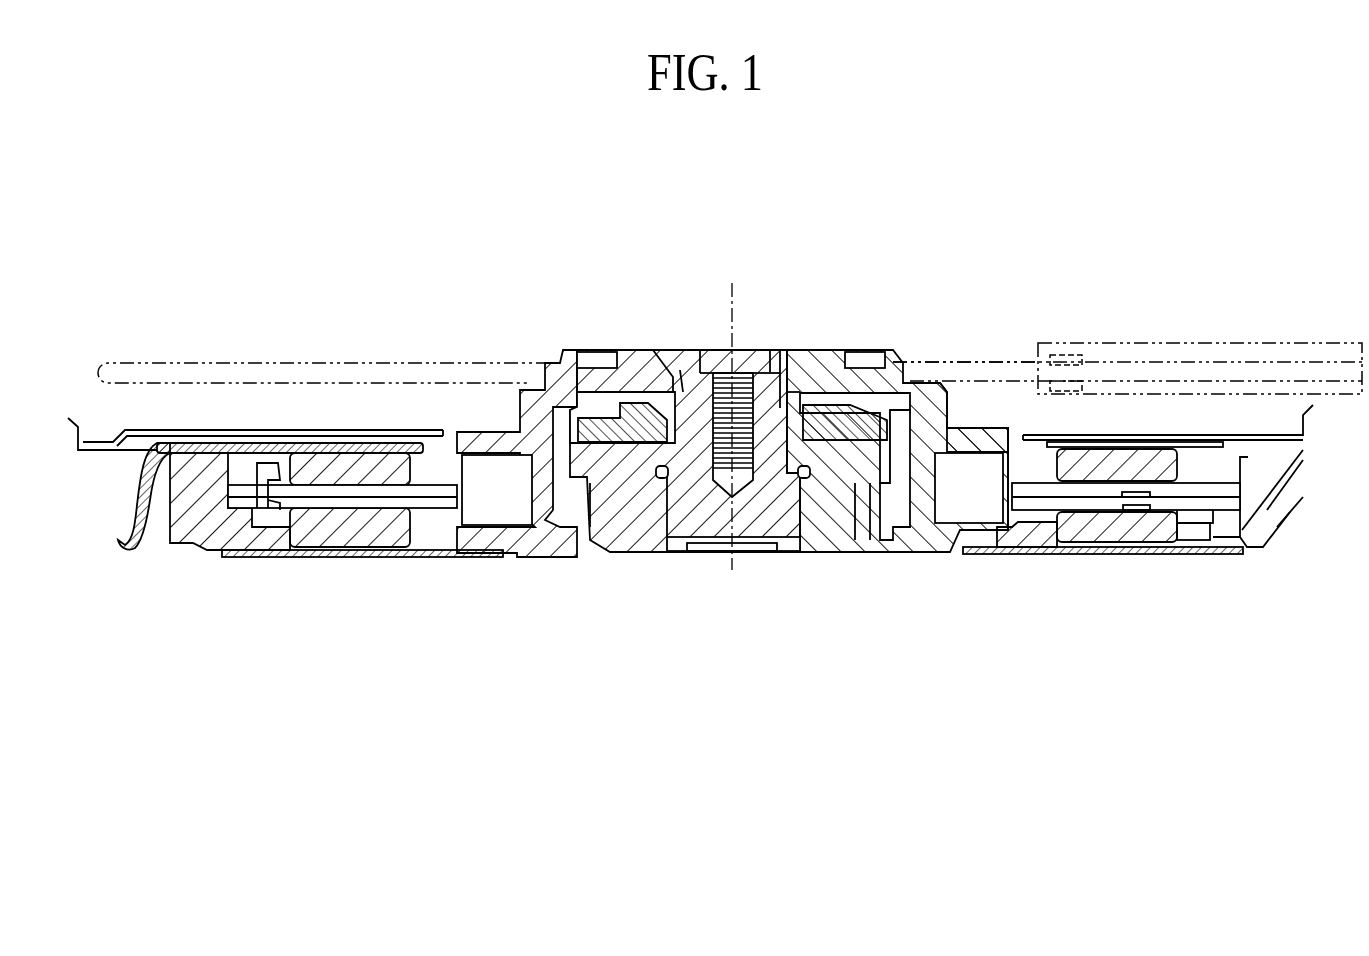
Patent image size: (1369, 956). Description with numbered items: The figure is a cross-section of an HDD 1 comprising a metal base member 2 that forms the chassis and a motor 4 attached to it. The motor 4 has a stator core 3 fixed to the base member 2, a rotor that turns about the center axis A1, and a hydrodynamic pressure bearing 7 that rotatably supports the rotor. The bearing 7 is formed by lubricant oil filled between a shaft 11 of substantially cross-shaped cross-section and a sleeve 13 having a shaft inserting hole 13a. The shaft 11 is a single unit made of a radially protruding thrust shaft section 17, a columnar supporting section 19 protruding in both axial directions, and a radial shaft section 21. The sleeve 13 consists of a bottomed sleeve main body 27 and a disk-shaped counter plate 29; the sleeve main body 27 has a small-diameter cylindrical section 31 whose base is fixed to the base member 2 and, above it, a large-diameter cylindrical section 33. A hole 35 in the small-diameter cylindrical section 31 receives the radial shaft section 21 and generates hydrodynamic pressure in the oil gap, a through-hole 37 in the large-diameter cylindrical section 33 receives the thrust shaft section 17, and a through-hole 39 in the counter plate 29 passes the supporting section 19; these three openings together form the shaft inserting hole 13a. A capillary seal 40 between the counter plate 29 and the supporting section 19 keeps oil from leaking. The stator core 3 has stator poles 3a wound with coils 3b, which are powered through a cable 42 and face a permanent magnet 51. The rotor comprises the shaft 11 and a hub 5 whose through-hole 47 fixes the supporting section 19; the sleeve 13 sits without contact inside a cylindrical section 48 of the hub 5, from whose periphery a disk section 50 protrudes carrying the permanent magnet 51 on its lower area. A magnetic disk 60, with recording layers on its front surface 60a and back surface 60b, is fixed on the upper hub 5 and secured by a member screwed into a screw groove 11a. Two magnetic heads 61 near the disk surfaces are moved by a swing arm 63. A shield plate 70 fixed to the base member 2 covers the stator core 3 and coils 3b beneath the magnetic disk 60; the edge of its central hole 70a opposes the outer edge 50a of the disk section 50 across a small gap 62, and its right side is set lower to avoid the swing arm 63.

The HDD 1 is at (538, 256).
The base member 2 is at (545, 555).
The stator core 3 is at (432, 557).
The stator poles 3a is at (1058, 552).
The coils 3b is at (1182, 543).
The motor 4 is at (635, 662).
The hub 5 is at (572, 552).
The hydrodynamic pressure bearing 7 is at (820, 470).
The shaft 11 is at (765, 525).
The screw groove 11a is at (745, 350).
The sleeve 13 is at (838, 552).
The shaft inserting hole 13a is at (688, 552).
The thrust shaft section 17 is at (626, 350).
The supporting section 19 is at (773, 350).
The radial shaft section 21 is at (643, 552).
The sleeve main body 27 is at (857, 552).
The counter plate 29 is at (595, 348).
The small-diameter cylindrical section 31 is at (875, 552).
The large-diameter cylindrical section 33 is at (915, 350).
The hole 35 is at (730, 551).
The through-hole 37 is at (563, 360).
The through-hole 39 is at (840, 350).
The capillary seal 40 is at (660, 350).
The cable 42 is at (140, 510).
The through-hole 47 is at (712, 350).
The cylindrical section 48 is at (927, 550).
The disk section 50 is at (965, 425).
The outer edge 50a is at (990, 395).
The permanent magnet 51 is at (492, 520).
The magnetic disk 60 is at (1155, 347).
The front surface 60a is at (962, 467).
The back surface 60b is at (968, 488).
The magnetic heads 61 is at (1080, 355).
The small gap 62 is at (1037, 552).
The swing arm 63 is at (1310, 345).
The shield plate 70 is at (296, 430).
The hole 70a is at (1043, 512).
The center axis A1 is at (732, 283).